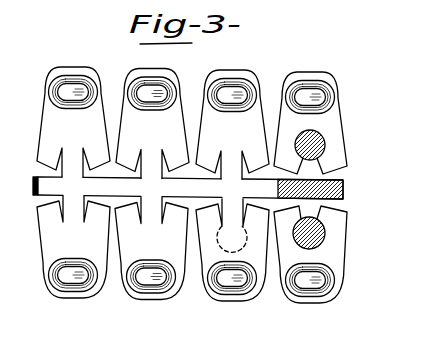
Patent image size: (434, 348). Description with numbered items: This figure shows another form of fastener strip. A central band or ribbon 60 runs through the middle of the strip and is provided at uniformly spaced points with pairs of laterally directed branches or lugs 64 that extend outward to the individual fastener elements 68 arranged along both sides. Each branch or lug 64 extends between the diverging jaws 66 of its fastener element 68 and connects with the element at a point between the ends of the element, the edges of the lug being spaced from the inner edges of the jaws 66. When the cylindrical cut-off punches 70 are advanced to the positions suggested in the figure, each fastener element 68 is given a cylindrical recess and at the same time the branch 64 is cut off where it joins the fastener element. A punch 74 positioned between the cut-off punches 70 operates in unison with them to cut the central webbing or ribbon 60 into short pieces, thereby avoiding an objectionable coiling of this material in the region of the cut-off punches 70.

The central band or ribbon 60 is at (188, 188).
The laterally directed branches or lugs 64 is at (60, 199).
The diverging jaws 66 is at (322, 221).
The fastener elements 68 is at (320, 257).
The cylindrical cut-off punches 70 is at (313, 144).
The punch 74 is at (344, 189).